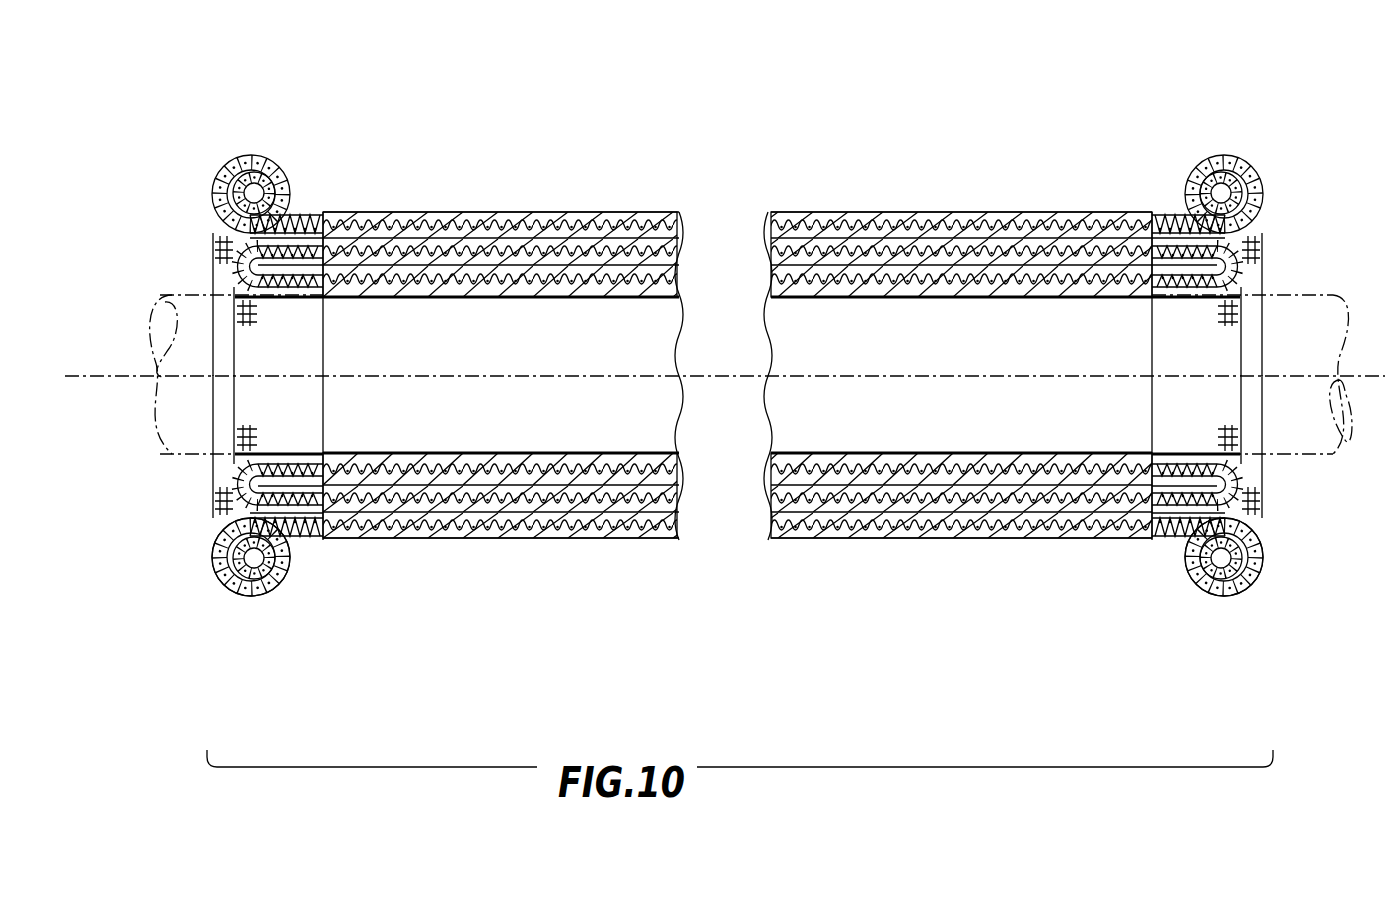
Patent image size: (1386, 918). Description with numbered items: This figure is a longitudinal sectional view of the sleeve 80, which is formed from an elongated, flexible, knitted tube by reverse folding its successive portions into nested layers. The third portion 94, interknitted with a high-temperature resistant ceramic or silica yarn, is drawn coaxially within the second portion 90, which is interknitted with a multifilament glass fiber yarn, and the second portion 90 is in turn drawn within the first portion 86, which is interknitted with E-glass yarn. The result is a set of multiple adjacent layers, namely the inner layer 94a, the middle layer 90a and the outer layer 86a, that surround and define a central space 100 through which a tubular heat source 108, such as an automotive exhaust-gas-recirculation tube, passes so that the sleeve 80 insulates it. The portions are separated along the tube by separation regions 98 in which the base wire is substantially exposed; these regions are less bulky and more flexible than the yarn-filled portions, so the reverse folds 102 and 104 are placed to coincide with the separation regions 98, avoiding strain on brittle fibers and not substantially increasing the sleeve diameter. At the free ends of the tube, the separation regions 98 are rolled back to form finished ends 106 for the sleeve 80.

The sleeve 80 is at (904, 164).
The first portion 86 is at (953, 218).
The outer layer 86a is at (680, 535).
The second portion 90 is at (1043, 242).
The middle layer 90a is at (683, 490).
The third portion 94 is at (983, 292).
The inner layer 94a is at (690, 468).
The separation regions 98 is at (240, 157).
The central space 100 is at (515, 356).
The reverse fold 102 is at (1237, 506).
The reverse fold 104 is at (240, 483).
The finished ends 106 is at (233, 598).
The tubular heat source 108 is at (1318, 292).